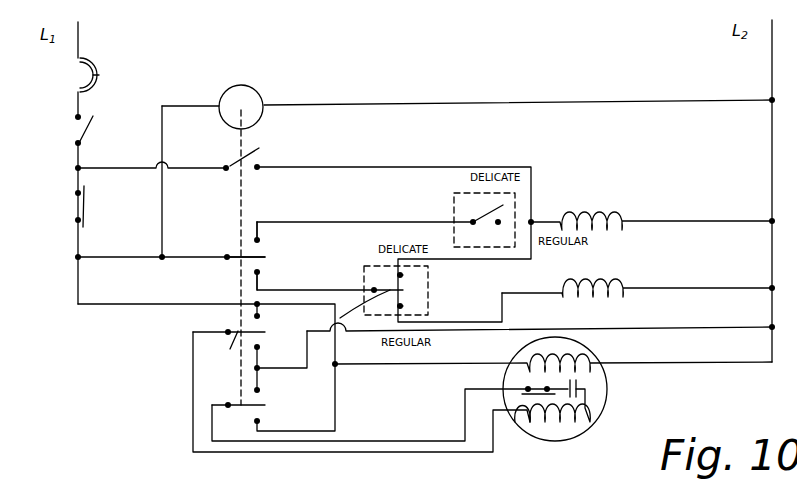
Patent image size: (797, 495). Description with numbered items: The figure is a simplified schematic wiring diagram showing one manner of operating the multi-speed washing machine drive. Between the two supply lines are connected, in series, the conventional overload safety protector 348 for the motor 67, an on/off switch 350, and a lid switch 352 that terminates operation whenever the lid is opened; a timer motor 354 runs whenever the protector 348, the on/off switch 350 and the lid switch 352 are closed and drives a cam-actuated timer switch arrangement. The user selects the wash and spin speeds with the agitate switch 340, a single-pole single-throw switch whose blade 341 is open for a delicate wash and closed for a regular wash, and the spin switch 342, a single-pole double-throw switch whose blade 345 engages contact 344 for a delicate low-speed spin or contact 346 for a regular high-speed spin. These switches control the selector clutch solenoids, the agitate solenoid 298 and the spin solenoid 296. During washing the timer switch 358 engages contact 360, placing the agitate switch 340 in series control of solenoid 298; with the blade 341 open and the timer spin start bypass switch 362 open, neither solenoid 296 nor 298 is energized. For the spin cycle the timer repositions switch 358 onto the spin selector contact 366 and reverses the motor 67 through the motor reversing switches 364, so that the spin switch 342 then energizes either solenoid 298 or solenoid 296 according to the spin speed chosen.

The motor 67 is at (606, 409).
The spin solenoid 296 is at (588, 283).
The agitate solenoid 298 is at (588, 212).
The agitate switch 340 is at (455, 193).
The switch blade 341 is at (500, 206).
The spin switch 342 is at (366, 266).
The contact 344 is at (401, 275).
The blade 345 is at (344, 310).
The contact 346 is at (401, 306).
The overload safety protector 348 is at (99, 77).
The on/off switch 350 is at (87, 130).
The lid switch 352 is at (83, 211).
The timer motor 354 is at (251, 100).
The timer switch 358 is at (226, 253).
The contact 360 is at (258, 240).
The timer spin start bypass switch 362 is at (231, 162).
The motor reversing switches 364 is at (238, 401).
The spin selector contact 366 is at (258, 272).